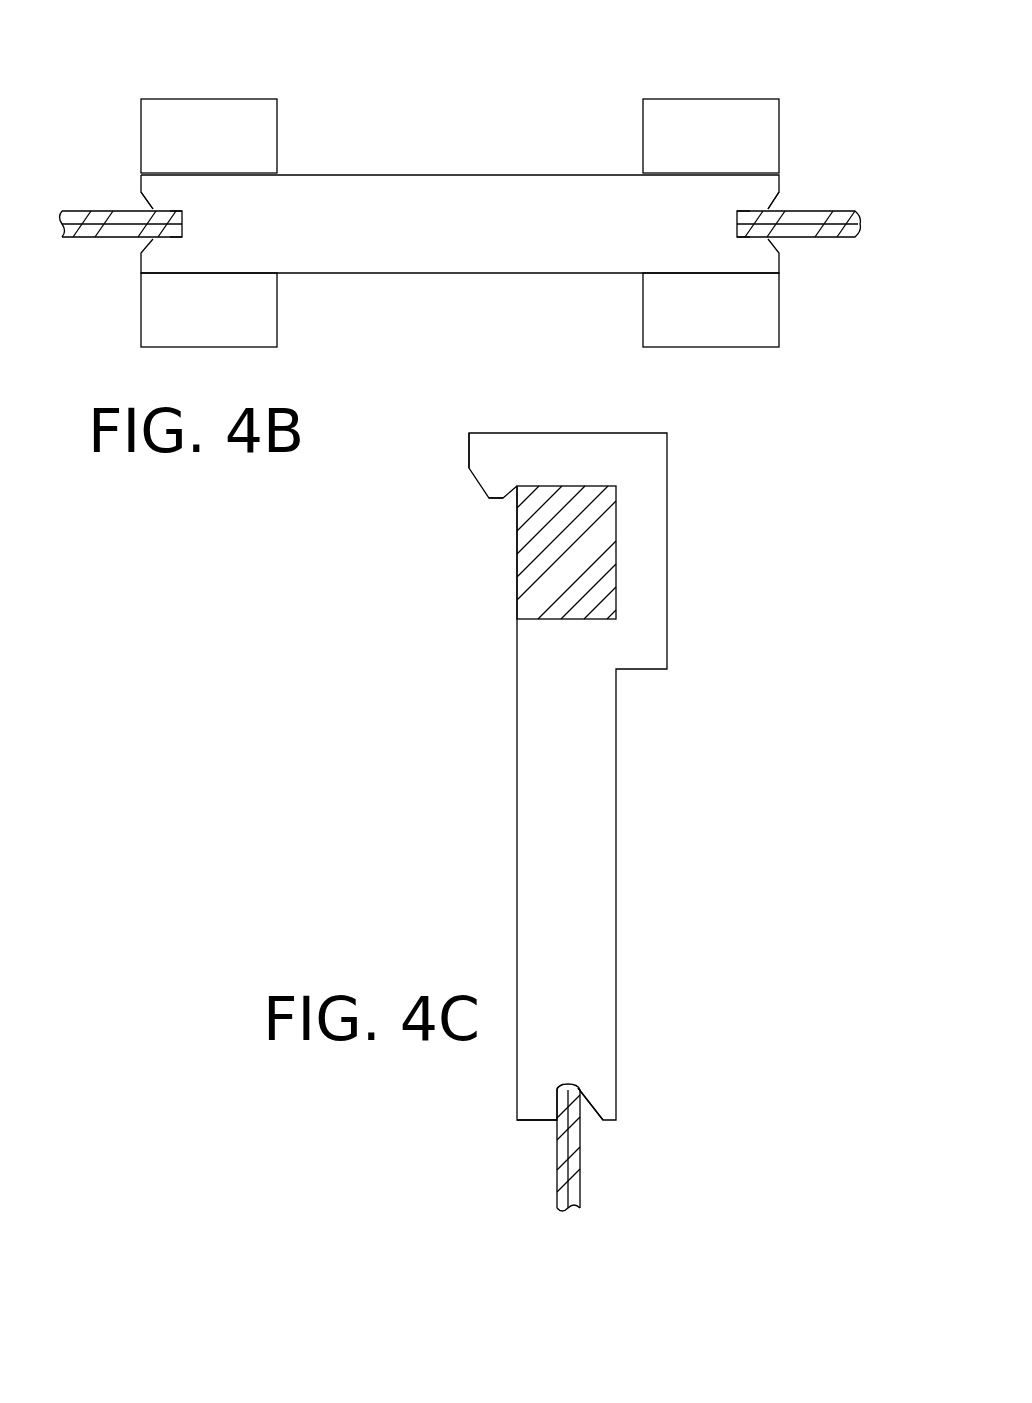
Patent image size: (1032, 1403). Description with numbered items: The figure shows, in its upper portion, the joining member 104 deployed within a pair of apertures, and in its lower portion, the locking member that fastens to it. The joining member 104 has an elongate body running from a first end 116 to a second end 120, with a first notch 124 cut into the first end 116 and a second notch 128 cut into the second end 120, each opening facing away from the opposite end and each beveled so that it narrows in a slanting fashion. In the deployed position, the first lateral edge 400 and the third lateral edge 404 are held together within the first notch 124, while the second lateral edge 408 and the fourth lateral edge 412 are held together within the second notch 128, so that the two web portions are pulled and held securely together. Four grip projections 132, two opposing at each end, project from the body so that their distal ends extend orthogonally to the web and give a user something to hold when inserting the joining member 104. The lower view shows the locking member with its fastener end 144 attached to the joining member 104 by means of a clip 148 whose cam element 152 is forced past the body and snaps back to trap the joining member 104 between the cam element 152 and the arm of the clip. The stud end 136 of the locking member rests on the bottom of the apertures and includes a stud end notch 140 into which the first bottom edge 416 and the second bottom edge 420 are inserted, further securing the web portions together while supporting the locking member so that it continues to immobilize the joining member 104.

In FIG. 4B, the joining member 104 is at (333, 240).
In FIG. 4C, the joining member 104 is at (553, 545).
In FIG. 4B, the first end 116 is at (141, 178).
In FIG. 4B, the second end 120 is at (780, 182).
In FIG. 4B, the first notch 124 is at (140, 240).
In FIG. 4B, the second notch 128 is at (767, 240).
In FIG. 4B, the grip projection 132 is at (183, 123).
In FIG. 4C, the stud end 136 is at (533, 1122).
In FIG. 4C, the stud end notch 140 is at (587, 1113).
In FIG. 4C, the fastener end 144 is at (644, 450).
In FIG. 4C, the clip 148 is at (477, 450).
In FIG. 4C, the cam element 152 is at (485, 492).
In FIG. 4B, the first lateral edge 400 is at (182, 215).
In FIG. 4B, the third lateral edge 404 is at (183, 227).
In FIG. 4B, the second lateral edge 408 is at (733, 217).
In FIG. 4B, the fourth lateral edge 412 is at (733, 227).
In FIG. 4C, the first bottom edge 416 is at (557, 1087).
In FIG. 4C, the second bottom edge 420 is at (573, 1083).